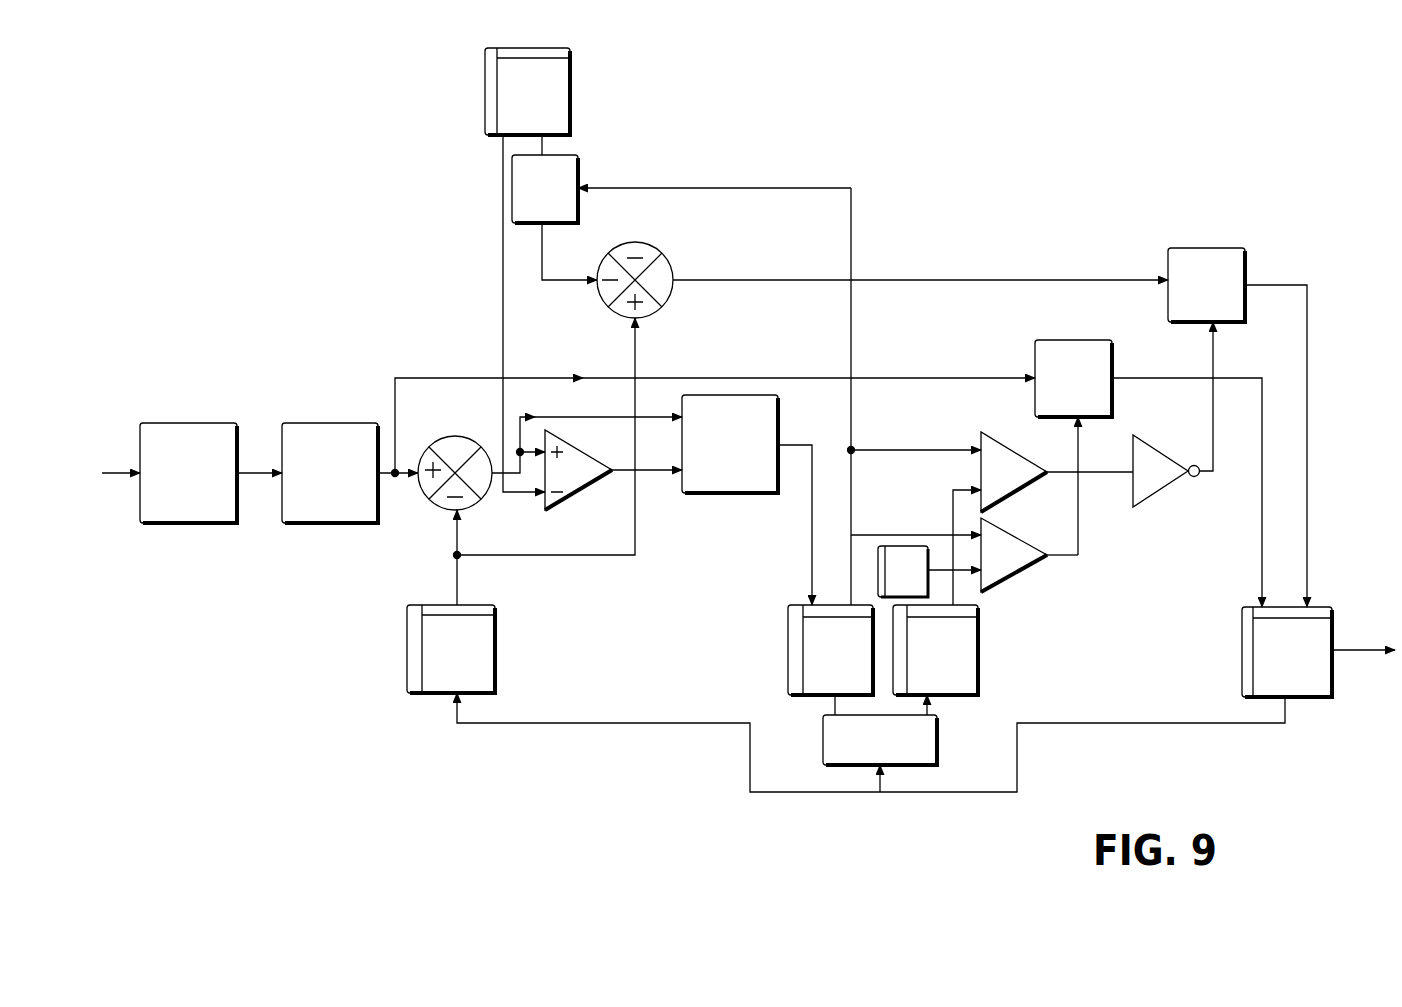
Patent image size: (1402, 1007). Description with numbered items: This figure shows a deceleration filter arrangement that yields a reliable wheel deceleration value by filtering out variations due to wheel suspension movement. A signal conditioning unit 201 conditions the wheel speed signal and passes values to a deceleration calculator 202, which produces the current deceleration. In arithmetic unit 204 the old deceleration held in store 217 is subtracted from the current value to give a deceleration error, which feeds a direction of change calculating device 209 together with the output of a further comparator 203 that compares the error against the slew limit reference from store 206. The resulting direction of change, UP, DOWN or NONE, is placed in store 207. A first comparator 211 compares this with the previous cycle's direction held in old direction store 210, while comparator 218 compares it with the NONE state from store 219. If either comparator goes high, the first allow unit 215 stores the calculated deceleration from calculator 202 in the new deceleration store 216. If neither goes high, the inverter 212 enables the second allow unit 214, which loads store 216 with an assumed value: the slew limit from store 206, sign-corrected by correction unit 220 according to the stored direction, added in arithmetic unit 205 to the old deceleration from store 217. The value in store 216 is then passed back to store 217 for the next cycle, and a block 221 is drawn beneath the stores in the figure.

The signal conditioning unit 201 is at (220, 437).
The deceleration calculator 202 is at (342, 430).
The comparator 203 is at (585, 483).
The arithmetic unit 204 is at (453, 437).
The arithmetic unit 205 is at (668, 270).
The slew limit store 206 is at (565, 108).
The direction of change store 207 is at (795, 632).
The direction of change calculating device 209 is at (754, 487).
The old direction store 210 is at (970, 655).
The comparator 211 is at (1030, 487).
The inverter 212 is at (1172, 488).
The allow unit 214 is at (1245, 272).
The allow unit 215 is at (1112, 365).
The new deceleration store 216 is at (1242, 630).
The old deceleration store 217 is at (487, 628).
The comparator 218 is at (1029, 573).
The NONE state store 219 is at (903, 571).
The sign correction unit 220 is at (573, 178).
The control block 221 is at (928, 738).